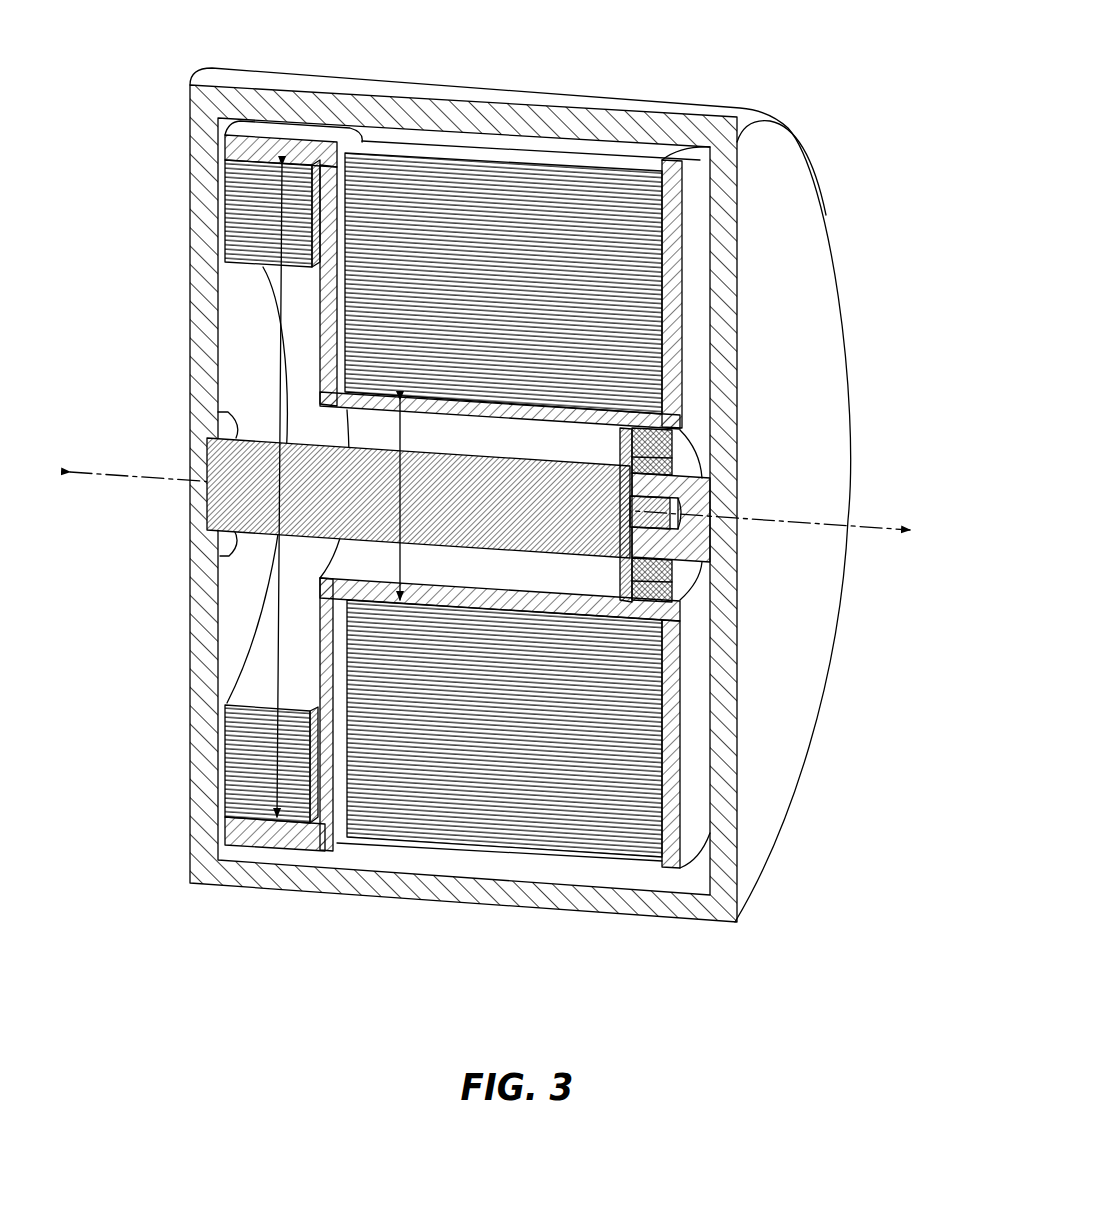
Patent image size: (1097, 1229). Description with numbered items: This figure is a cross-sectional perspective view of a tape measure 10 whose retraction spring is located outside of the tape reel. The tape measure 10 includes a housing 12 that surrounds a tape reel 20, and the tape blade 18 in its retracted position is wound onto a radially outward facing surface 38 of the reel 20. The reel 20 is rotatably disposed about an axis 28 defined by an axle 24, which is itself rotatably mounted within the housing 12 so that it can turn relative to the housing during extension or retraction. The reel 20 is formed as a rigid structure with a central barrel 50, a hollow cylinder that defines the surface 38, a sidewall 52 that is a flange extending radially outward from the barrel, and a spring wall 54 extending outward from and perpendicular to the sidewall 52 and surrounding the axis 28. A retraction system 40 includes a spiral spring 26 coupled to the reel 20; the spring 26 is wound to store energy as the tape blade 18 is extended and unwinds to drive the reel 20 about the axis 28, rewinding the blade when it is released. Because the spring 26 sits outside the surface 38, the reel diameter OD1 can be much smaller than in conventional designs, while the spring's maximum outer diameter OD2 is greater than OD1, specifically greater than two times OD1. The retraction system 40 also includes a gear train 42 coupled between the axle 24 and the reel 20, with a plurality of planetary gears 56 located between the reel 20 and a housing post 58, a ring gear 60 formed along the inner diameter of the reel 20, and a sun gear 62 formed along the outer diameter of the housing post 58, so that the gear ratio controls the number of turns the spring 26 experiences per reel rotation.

The tape measure 10 is at (868, 123).
The housing 12 is at (783, 145).
The tape blade 18 is at (660, 300).
The tape reel 20 is at (690, 175).
The axle 24 is at (530, 535).
The spiral spring 26 is at (250, 192).
The axis 28 is at (133, 470).
The radially outward facing surface 38 is at (553, 396).
The retraction system 40 is at (162, 272).
The gear train 42 is at (708, 460).
The central barrel 50 is at (447, 598).
The sidewall 52 is at (341, 205).
The spring wall 54 is at (292, 137).
The planetary gears 56 is at (652, 600).
The housing post 58 is at (655, 551).
The ring gear 60 is at (675, 425).
The sun gear 62 is at (712, 555).
The reel diameter OD1 is at (343, 578).
The spring maximum outer diameter OD2 is at (276, 663).